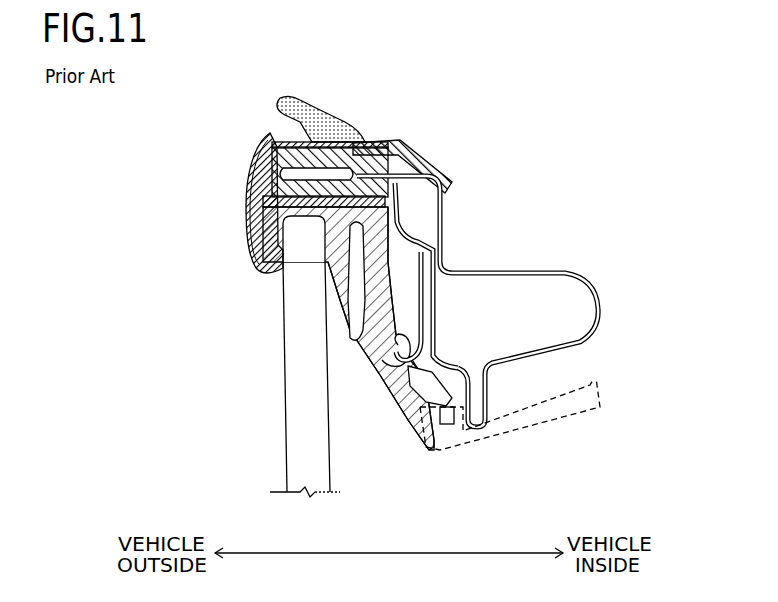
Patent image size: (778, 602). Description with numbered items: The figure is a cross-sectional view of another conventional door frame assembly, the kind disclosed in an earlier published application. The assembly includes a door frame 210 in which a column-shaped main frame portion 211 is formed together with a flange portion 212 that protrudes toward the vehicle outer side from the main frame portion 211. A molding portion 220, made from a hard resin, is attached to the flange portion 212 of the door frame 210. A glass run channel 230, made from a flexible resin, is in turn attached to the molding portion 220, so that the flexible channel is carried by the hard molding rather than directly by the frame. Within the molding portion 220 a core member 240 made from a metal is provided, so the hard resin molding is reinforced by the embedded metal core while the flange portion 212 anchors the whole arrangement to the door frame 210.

The door frame 210 is at (613, 320).
The main frame portion 211 is at (516, 272).
The flange portion 212 is at (311, 150).
The molding portion 220 is at (388, 135).
The glass run channel 230 is at (400, 462).
The core member 240 is at (248, 199).